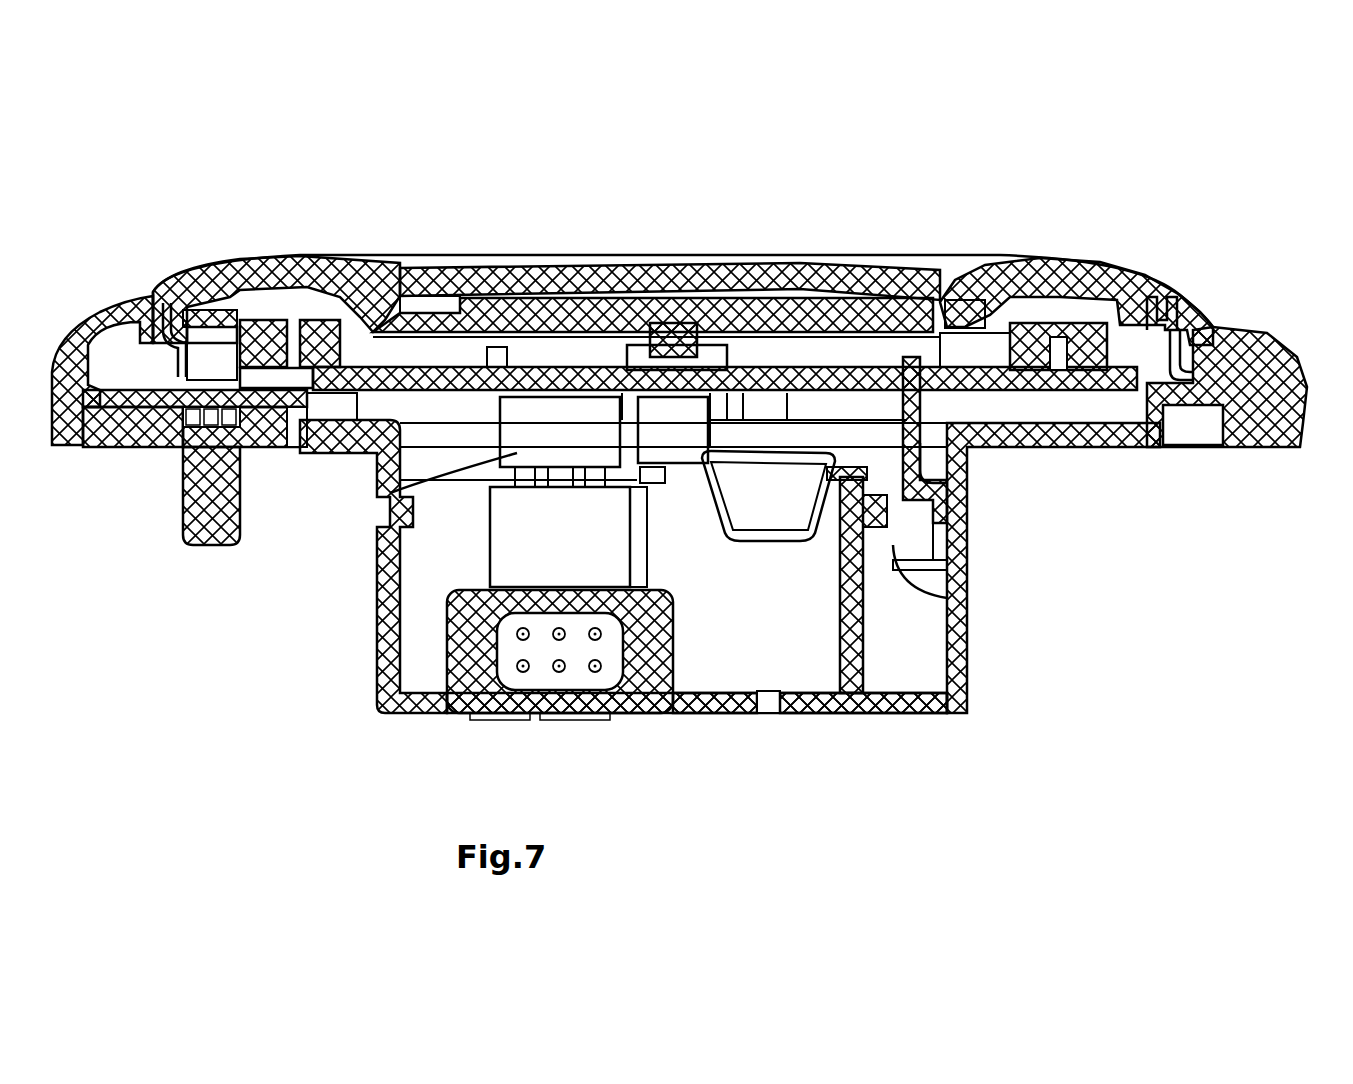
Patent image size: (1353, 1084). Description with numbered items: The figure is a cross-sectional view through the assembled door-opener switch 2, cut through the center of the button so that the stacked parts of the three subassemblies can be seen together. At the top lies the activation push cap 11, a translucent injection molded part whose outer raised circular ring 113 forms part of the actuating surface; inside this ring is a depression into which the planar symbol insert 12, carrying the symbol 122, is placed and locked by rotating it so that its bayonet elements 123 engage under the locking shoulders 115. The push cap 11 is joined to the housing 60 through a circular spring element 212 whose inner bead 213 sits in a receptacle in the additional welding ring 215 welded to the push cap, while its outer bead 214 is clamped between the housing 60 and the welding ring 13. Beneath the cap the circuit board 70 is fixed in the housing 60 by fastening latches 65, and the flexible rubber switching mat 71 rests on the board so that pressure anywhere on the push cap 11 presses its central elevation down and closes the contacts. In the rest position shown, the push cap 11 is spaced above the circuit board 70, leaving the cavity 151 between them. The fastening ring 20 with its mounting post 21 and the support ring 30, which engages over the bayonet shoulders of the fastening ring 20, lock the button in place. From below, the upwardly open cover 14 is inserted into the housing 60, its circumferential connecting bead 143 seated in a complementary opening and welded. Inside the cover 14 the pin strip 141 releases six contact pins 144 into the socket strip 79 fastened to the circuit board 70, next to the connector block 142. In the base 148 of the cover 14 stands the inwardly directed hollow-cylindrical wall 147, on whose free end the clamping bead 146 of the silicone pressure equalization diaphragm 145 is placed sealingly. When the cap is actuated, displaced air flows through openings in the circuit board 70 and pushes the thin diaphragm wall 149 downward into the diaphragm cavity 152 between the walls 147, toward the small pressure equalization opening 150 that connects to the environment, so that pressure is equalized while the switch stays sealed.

The device 2 is at (97, 450).
The push cap 11 is at (1085, 272).
The symbol insert 12 is at (905, 290).
The welding ring 13 is at (125, 350).
The cover 14 is at (968, 645).
The fastening ring 20 is at (157, 450).
The mounting post 21 is at (183, 530).
The support ring 30 is at (1230, 378).
The housing 60 is at (963, 547).
The fastening latch 65 is at (957, 468).
The circuit board 70 is at (443, 382).
The switching mat 71 is at (705, 345).
The socket strip 79 is at (500, 475).
The circular ring 113 is at (295, 258).
The locking shoulder 115 is at (975, 300).
The symbol 122 is at (610, 265).
The bayonet element 123 is at (397, 305).
The pin strip 141 is at (533, 545).
The connector block 142 is at (457, 713).
The connecting bead 143 is at (957, 570).
The contact pin 144 is at (490, 520).
The pressure equalization diaphragm 145 is at (957, 500).
The clamping bead 146 is at (957, 603).
The hollow-cylindrical wall 147 is at (690, 708).
The base 148 is at (908, 708).
The diaphragm wall 149 is at (823, 510).
The pressure equalization opening 150 is at (787, 517).
The cavity 151 is at (957, 345).
The diaphragm cavity 152 is at (760, 707).
The spring element 212 is at (207, 322).
The inner bead 213 is at (1150, 325).
The outer bead 214 is at (1200, 385).
The additional ring 215 is at (222, 328).